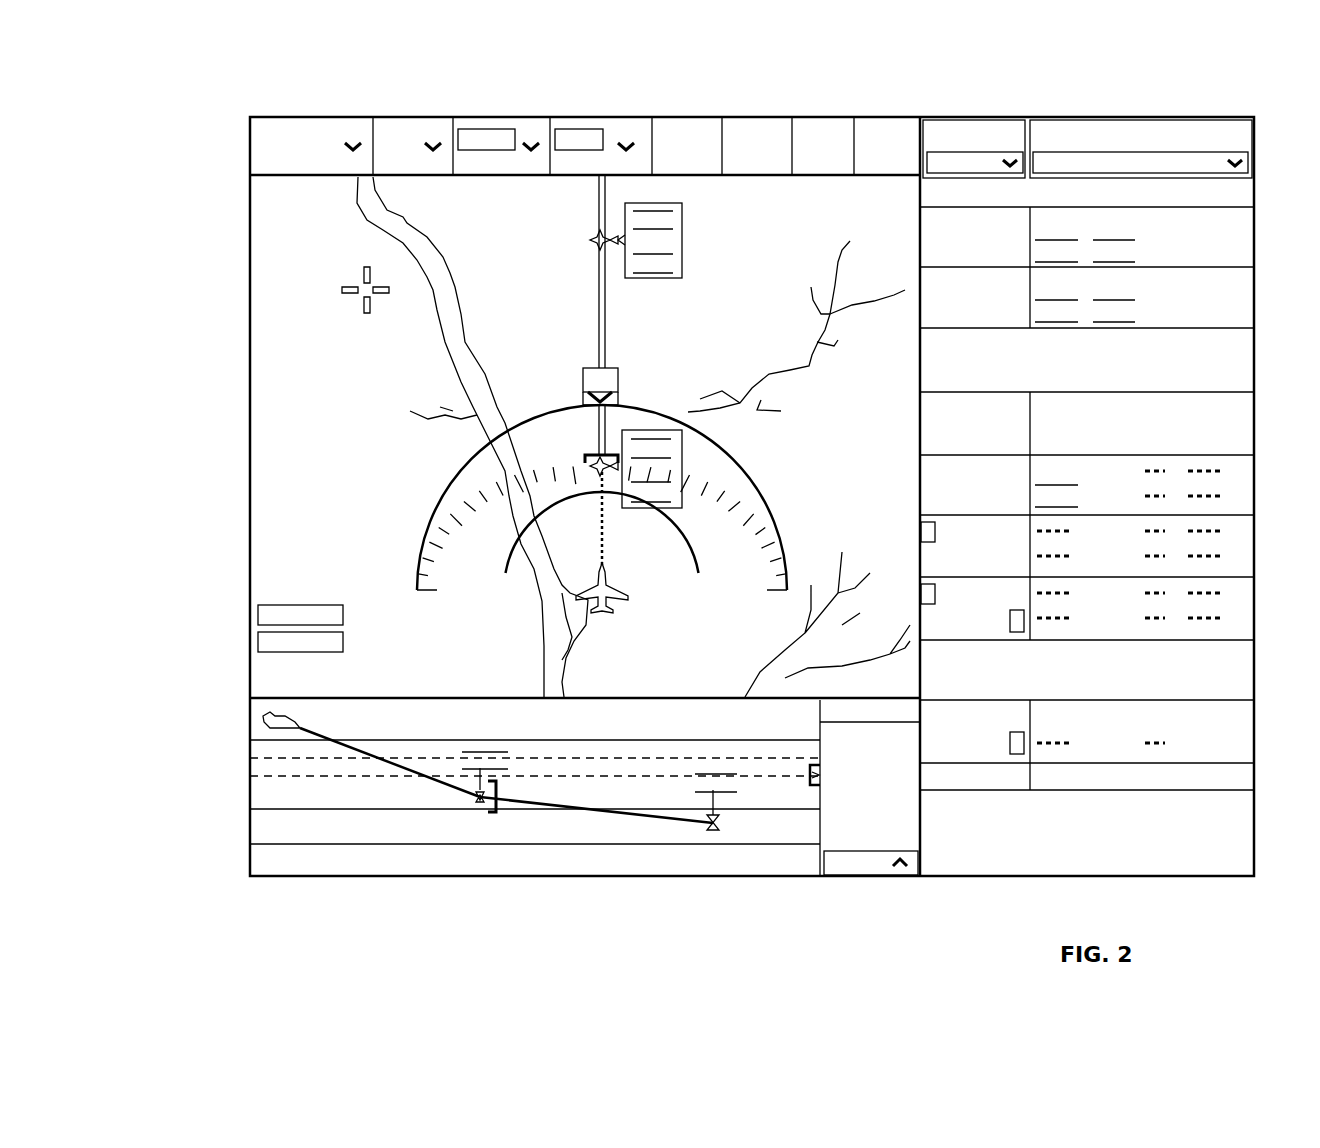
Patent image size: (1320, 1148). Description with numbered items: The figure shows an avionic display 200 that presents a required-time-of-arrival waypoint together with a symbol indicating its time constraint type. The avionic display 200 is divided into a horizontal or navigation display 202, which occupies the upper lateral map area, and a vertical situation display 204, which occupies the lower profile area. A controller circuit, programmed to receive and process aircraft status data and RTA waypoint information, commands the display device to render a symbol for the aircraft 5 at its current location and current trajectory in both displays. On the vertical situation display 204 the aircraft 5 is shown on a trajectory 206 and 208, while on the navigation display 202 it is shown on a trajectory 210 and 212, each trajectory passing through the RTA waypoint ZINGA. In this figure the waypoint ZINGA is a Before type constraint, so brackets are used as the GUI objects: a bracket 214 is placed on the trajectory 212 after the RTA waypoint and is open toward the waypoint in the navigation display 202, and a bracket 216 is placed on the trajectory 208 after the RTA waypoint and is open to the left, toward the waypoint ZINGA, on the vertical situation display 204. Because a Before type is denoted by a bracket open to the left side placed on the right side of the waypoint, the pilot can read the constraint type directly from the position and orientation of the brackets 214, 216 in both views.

The avionic display 200 is at (306, 90).
The navigation display 202 is at (233, 178).
The vertical situation display 204 is at (233, 700).
The trajectory 206 is at (396, 772).
The trajectory 208 is at (672, 822).
The trajectory 210 is at (600, 523).
The trajectory 212 is at (588, 298).
The bracket 214 is at (617, 457).
The bracket 216 is at (493, 805).
The aircraft 5 is at (585, 602).